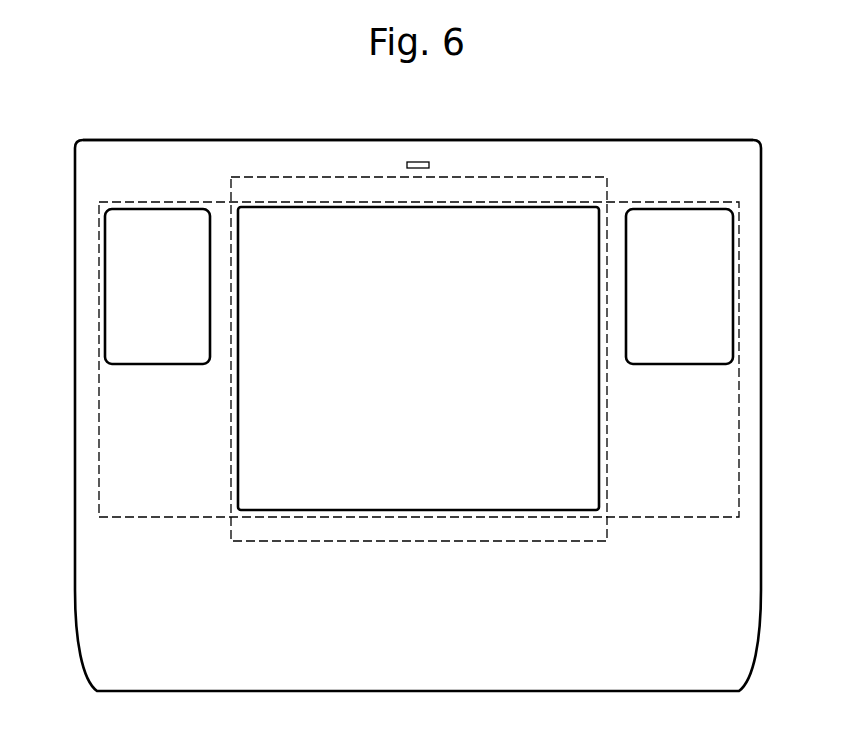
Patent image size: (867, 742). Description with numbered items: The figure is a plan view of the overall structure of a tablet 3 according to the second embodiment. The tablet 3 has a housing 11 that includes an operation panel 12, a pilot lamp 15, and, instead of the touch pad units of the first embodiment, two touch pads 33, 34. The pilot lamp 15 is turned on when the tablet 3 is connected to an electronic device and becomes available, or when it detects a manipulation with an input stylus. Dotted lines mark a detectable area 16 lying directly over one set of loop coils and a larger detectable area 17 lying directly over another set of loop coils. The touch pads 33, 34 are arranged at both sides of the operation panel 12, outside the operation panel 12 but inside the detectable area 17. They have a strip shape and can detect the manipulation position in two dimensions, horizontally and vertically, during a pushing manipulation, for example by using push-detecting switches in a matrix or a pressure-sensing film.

The tablet 3 is at (764, 113).
The housing 11 is at (550, 140).
The operation panel 12 is at (580, 476).
The pilot lamp 15 is at (419, 162).
The detectable area 16 is at (425, 541).
The detectable area 17 is at (739, 428).
The touch pad 33 is at (715, 270).
The touch pad 34 is at (122, 272).